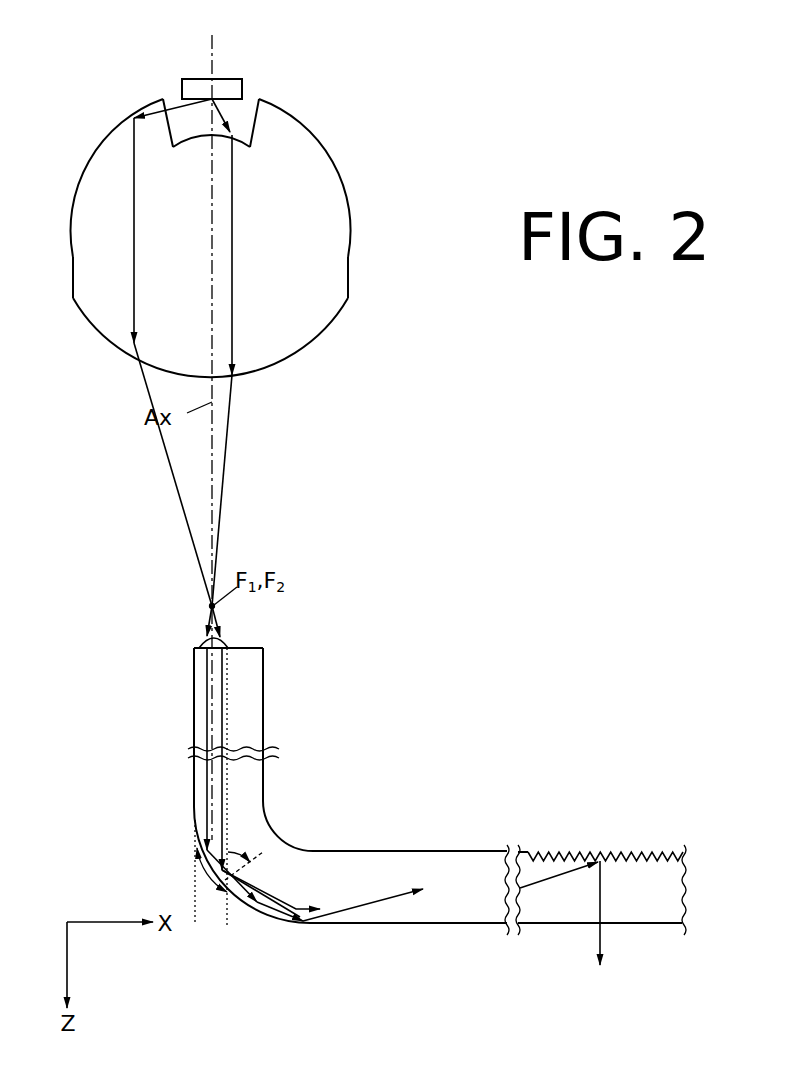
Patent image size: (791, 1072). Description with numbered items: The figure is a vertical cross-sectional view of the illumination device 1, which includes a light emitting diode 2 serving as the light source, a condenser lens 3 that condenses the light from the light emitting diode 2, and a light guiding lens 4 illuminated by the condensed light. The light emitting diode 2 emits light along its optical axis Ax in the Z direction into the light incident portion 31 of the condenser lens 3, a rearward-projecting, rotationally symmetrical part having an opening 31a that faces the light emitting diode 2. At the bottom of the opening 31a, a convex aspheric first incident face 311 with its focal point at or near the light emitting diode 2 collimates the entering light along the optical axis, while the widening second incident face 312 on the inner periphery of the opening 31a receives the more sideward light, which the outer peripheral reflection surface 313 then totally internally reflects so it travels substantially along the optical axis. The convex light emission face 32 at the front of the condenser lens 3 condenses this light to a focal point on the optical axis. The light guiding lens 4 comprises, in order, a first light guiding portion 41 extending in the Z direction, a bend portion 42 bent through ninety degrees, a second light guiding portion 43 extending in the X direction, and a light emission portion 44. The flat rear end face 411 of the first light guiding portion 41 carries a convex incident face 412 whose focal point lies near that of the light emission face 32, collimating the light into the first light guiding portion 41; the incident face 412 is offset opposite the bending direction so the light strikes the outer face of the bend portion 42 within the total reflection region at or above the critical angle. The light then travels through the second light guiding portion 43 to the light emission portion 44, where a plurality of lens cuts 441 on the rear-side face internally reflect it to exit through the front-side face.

The illumination device 1 is at (433, 39).
The light emitting diode (LED) 2 is at (198, 78).
The condenser lens 3 is at (206, 205).
The light incident portion 31 is at (206, 145).
The opening 31a is at (227, 90).
The first incident face 311 is at (190, 137).
The second incident face 312 is at (247, 103).
The reflection surface 313 is at (63, 163).
The light emission face 32 is at (322, 323).
The light guiding lens 4 is at (388, 788).
The first light guiding portion 41 is at (225, 762).
The rear end face 411 is at (252, 647).
The incident face 412 is at (202, 642).
The bend portion 42 is at (287, 842).
The second light guiding portion 43 is at (418, 923).
The light emission portion 44 is at (602, 884).
The lens cuts 441 is at (575, 860).